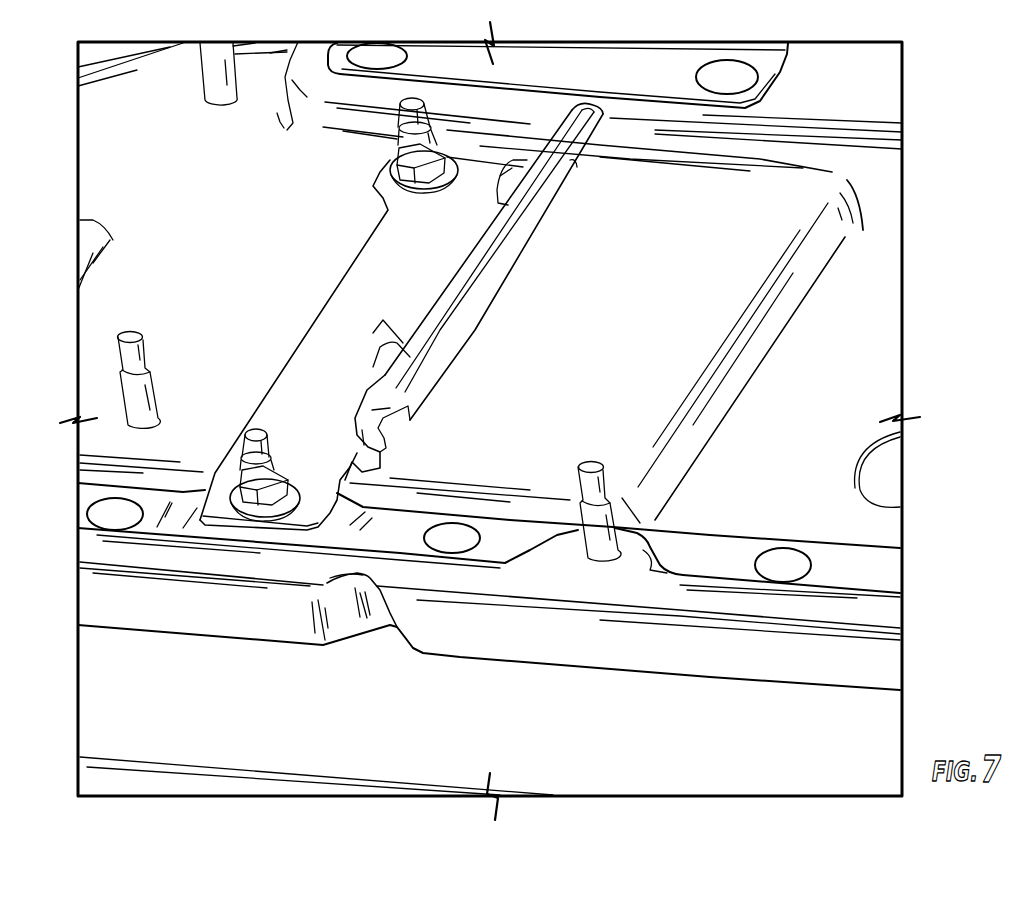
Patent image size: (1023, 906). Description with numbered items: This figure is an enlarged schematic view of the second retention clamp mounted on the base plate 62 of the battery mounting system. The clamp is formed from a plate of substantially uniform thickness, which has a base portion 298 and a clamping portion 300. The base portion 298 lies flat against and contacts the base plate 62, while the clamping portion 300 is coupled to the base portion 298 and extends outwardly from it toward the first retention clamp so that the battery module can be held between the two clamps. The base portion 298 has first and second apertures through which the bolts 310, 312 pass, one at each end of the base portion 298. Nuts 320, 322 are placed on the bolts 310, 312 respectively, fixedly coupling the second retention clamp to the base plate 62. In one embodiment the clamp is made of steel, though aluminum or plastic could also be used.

The base plate 62 is at (268, 247).
The base portion 298 is at (330, 325).
The clamping portion 300 is at (480, 268).
The bolt 310 is at (264, 437).
The bolt 312 is at (382, 126).
The nut 320 is at (286, 473).
The nut 322 is at (399, 168).